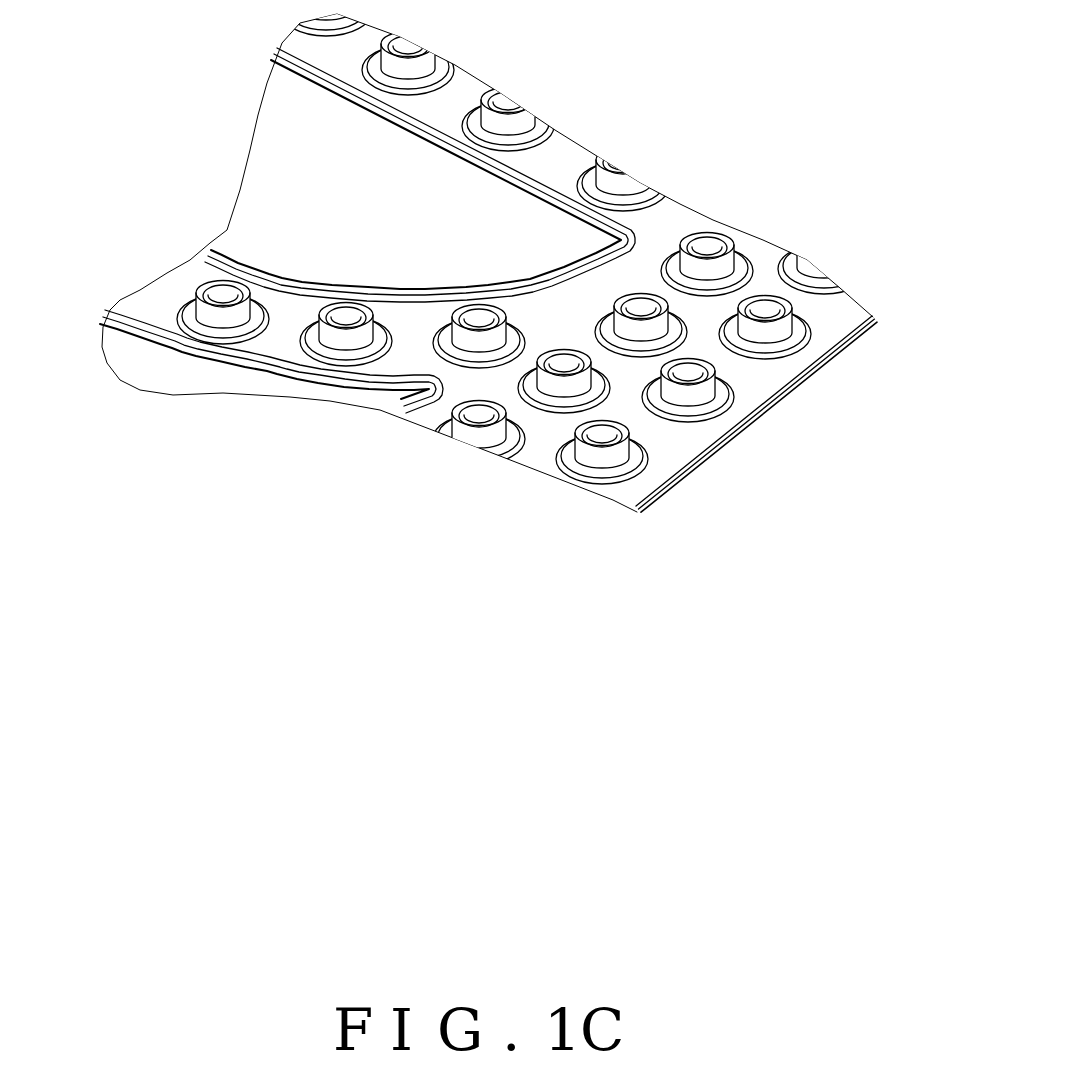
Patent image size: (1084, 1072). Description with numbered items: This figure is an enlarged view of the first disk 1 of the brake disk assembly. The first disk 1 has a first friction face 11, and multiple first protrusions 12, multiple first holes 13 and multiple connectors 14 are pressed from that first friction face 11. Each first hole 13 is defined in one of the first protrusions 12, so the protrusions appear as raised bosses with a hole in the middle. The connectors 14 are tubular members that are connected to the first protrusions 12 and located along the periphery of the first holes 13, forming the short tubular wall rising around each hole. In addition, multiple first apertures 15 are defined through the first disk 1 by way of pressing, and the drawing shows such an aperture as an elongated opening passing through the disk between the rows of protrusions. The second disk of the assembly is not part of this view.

The first disk 1 is at (502, 315).
The first friction face 11 is at (683, 478).
The first protrusions 12 is at (748, 467).
The first holes 13 is at (705, 375).
The connectors 14 is at (697, 398).
The first apertures 15 is at (287, 153).